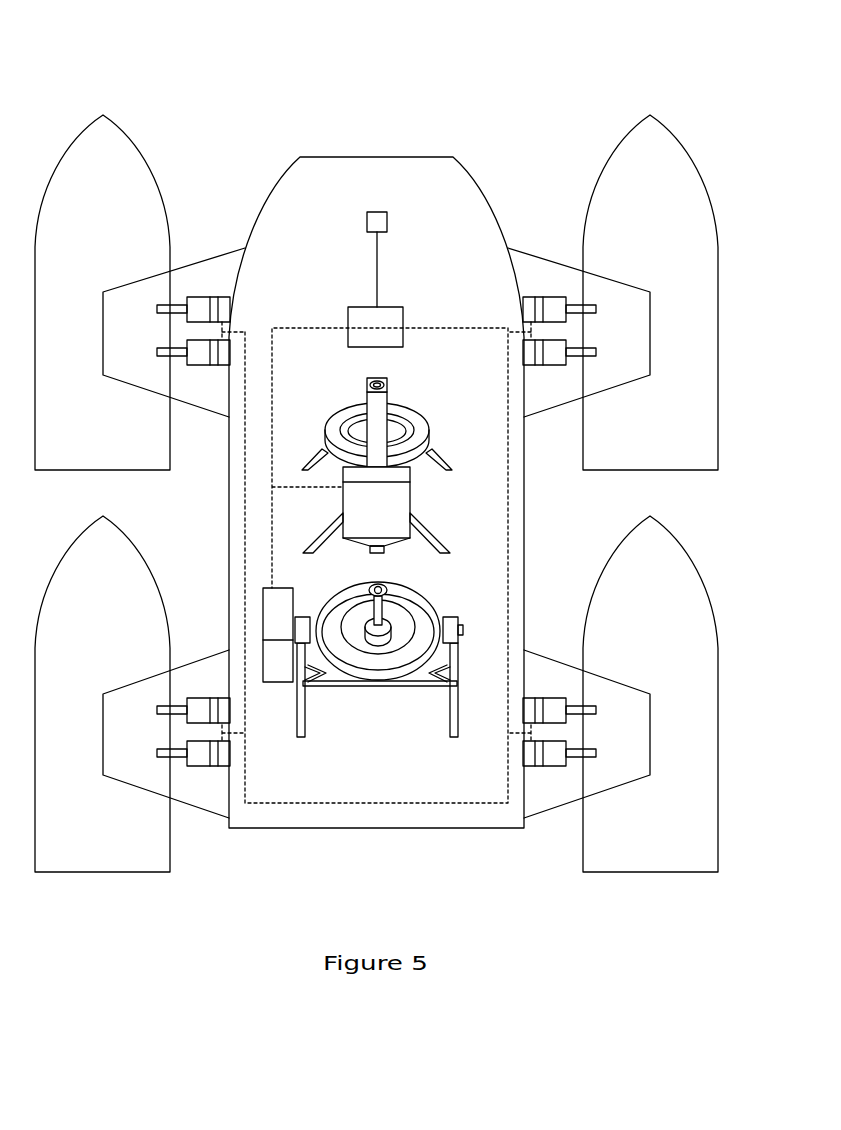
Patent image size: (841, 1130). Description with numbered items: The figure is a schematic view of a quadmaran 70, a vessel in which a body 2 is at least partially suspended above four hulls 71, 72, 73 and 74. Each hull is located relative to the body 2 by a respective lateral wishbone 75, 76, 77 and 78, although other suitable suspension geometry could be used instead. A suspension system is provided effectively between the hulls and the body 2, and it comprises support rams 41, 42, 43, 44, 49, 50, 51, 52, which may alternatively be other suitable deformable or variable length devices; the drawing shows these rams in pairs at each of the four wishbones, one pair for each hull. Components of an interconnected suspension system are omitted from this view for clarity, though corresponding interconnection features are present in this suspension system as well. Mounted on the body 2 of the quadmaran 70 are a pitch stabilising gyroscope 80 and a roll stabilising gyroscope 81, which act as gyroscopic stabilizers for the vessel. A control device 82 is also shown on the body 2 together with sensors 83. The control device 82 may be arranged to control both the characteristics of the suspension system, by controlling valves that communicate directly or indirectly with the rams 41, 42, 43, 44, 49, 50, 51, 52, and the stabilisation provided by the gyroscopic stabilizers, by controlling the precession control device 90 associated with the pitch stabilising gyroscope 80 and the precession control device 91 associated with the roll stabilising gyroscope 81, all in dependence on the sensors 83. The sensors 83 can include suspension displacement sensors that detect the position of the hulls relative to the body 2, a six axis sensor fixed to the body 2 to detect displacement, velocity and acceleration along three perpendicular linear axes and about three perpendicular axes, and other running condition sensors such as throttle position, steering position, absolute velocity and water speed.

The body 2 is at (285, 180).
The support ram 41 is at (173, 293).
The support ram 42 is at (582, 293).
The support ram 43 is at (582, 774).
The support ram 44 is at (173, 774).
The support ram 49 is at (173, 374).
The support ram 50 is at (582, 374).
The support ram 51 is at (582, 693).
The support ram 52 is at (174, 693).
The quadmaran 70 is at (641, 81).
The hull 71 is at (132, 146).
The hull 72 is at (618, 153).
The hull 73 is at (618, 553).
The hull 74 is at (132, 549).
The lateral wishbone 75 is at (205, 260).
The lateral wishbone 76 is at (545, 259).
The lateral wishbone 77 is at (545, 657).
The lateral wishbone 78 is at (205, 660).
The pitch stabilising gyroscope 80 is at (423, 384).
The roll stabilising gyroscope 81 is at (431, 739).
The control device 82 is at (403, 297).
The sensors 83 is at (394, 210).
The precession control device 90 is at (402, 505).
The precession control device 91 is at (278, 673).